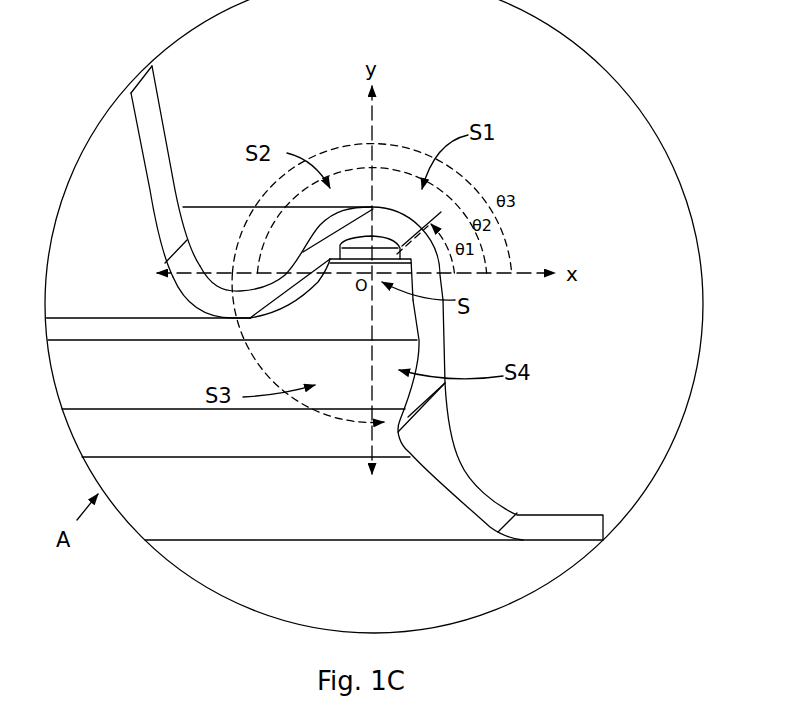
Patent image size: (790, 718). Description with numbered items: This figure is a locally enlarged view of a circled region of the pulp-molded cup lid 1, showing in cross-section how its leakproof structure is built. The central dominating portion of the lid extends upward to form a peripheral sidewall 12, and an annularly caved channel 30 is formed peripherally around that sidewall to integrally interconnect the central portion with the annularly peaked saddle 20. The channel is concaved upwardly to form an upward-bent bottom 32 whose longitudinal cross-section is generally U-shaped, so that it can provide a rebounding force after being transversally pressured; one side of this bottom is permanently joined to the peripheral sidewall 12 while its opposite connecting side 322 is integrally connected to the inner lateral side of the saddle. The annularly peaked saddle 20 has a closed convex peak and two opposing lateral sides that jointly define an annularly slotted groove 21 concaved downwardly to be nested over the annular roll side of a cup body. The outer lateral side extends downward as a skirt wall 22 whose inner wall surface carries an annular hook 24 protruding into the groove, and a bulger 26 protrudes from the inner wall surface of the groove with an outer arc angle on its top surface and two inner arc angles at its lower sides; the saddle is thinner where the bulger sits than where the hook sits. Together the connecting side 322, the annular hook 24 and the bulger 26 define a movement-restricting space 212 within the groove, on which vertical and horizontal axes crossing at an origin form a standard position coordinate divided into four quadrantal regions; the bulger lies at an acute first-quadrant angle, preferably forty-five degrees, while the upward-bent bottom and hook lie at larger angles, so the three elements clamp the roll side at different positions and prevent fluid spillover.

The pulp-molded cup lid 1 is at (246, 52).
The peripheral sidewall 12 is at (162, 122).
The annularly caved channel 30 is at (246, 290).
The upward-bent bottom 32 is at (250, 320).
The connecting side 322 is at (334, 274).
The annularly peaked saddle 20 is at (379, 253).
The annularly slotted groove 21 is at (366, 240).
The movement-restricting space 212 is at (388, 258).
The bulger 26 is at (405, 243).
The skirt wall 22 is at (458, 458).
The annular hook 24 is at (410, 415).